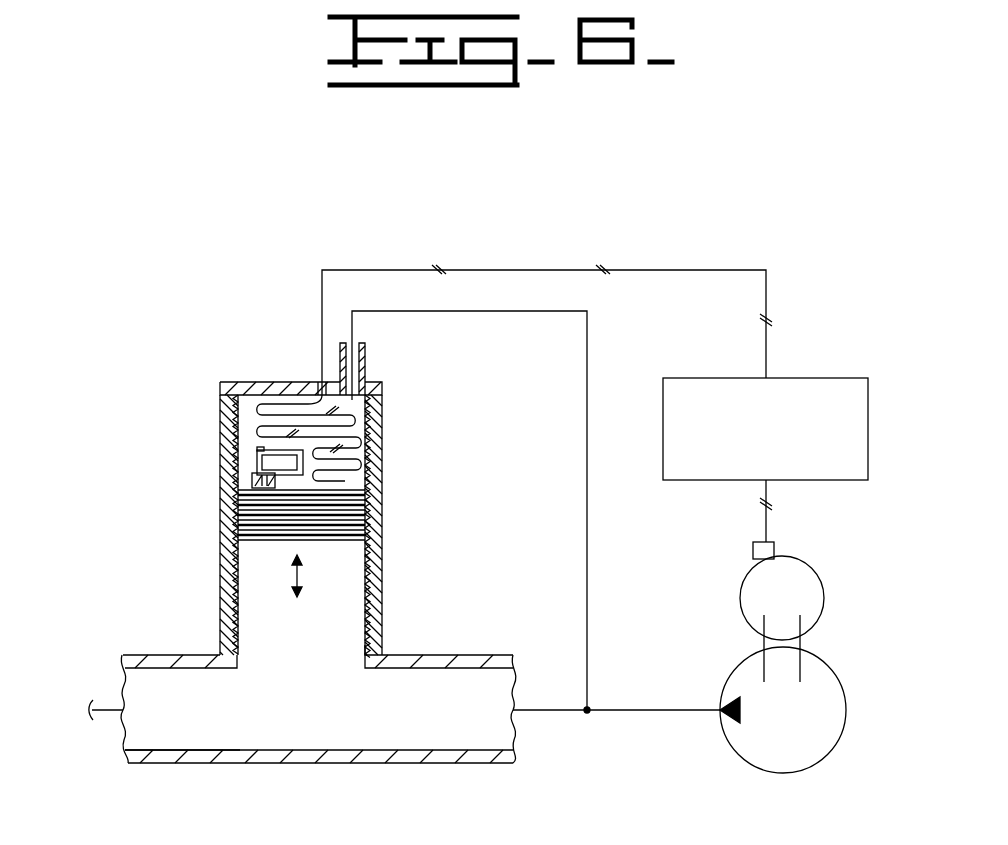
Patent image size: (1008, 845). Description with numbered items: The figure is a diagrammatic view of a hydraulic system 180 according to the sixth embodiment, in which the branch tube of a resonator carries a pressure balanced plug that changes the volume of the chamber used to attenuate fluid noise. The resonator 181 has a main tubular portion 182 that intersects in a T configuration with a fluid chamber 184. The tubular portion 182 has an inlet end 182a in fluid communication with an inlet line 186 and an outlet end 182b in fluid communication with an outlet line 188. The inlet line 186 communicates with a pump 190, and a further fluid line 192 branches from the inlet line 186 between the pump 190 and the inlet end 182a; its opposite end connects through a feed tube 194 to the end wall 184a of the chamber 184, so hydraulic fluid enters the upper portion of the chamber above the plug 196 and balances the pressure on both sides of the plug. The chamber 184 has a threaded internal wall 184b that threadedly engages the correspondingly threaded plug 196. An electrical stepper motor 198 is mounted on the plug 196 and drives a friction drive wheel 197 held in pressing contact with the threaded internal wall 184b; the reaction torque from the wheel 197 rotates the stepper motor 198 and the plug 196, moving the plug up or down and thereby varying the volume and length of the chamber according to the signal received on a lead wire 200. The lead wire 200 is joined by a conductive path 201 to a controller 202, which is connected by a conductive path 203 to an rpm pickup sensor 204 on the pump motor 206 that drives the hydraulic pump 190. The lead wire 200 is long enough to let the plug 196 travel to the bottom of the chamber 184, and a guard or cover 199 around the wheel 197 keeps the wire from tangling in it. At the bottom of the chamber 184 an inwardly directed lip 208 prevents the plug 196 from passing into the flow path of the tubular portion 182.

The hydraulic system 180 is at (252, 312).
The resonator 181 is at (412, 618).
The main tubular portion 182 is at (272, 757).
The inlet end 182a is at (462, 757).
The outlet end 182b is at (192, 757).
The fluid chamber 184 is at (243, 422).
The end wall 184a is at (232, 388).
The threaded internal wall 184b is at (236, 477).
The inlet line 186 is at (668, 712).
The outlet line 188 is at (105, 712).
The pump 190 is at (836, 745).
The fluid line 192 is at (587, 452).
The feed tube 194 is at (366, 368).
The plug 196 is at (238, 531).
The friction drive wheel 197 is at (257, 460).
The electrical stepper motor 198 is at (254, 481).
The guard or cover 199 is at (365, 453).
The lead wire 200 is at (290, 388).
The conductive path 201 is at (512, 270).
The controller 202 is at (808, 378).
The conductive path 203 is at (770, 525).
The rpm pickup sensor 204 is at (753, 550).
The pump motor 206 is at (822, 583).
The inwardly directed lip 208 is at (365, 650).